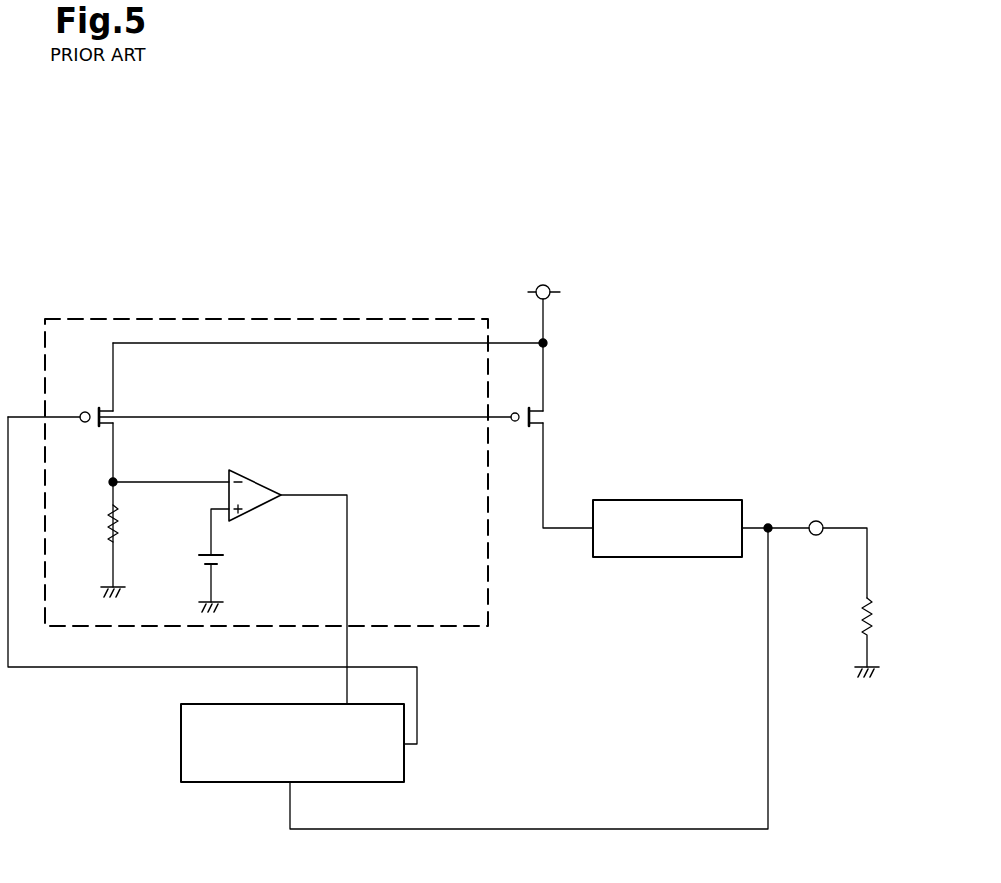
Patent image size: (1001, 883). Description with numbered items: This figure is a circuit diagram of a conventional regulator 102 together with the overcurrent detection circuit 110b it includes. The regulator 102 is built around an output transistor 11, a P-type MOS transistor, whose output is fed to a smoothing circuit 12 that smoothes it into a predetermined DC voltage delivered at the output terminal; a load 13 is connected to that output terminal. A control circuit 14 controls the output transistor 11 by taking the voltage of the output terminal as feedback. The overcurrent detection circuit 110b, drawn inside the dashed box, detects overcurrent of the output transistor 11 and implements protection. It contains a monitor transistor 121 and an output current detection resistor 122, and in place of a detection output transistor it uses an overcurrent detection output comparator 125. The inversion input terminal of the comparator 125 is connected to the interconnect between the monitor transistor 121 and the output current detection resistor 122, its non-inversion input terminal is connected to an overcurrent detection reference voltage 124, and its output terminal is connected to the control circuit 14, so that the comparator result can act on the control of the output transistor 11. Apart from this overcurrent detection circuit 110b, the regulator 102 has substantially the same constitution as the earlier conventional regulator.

The regulator 102 is at (425, 215).
The overcurrent detection circuit 110b is at (170, 318).
The monitor transistor 121 is at (128, 412).
The output current detection resistor 122 is at (129, 530).
The overcurrent detection reference voltage 124 is at (231, 556).
The overcurrent detection output comparator 125 is at (278, 481).
The output transistor 11 is at (555, 417).
The smoothing circuit 12 is at (691, 497).
The load 13 is at (853, 617).
The control circuit 14 is at (410, 772).